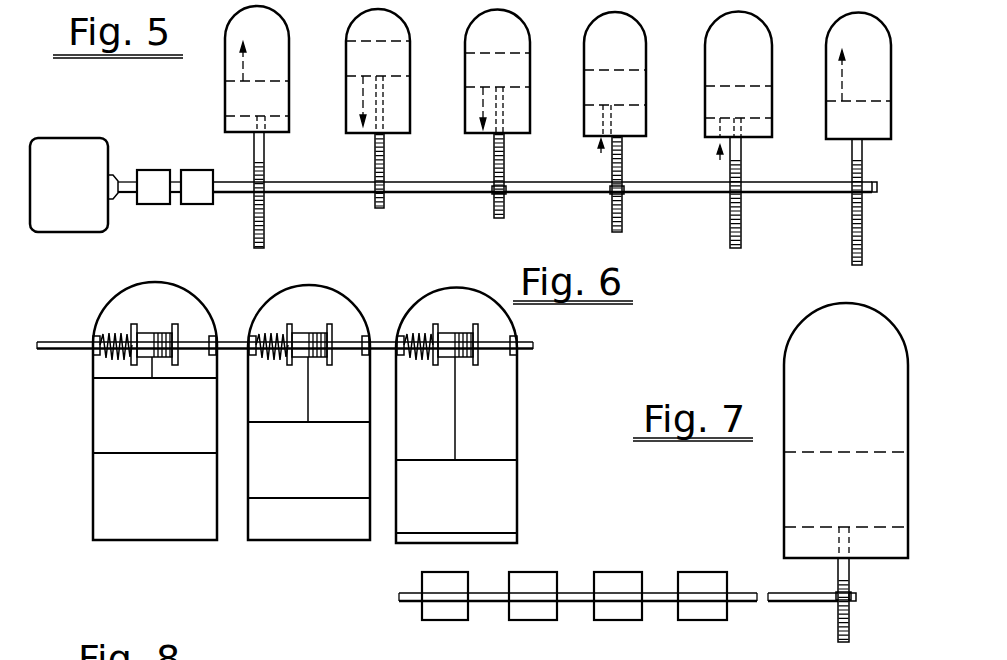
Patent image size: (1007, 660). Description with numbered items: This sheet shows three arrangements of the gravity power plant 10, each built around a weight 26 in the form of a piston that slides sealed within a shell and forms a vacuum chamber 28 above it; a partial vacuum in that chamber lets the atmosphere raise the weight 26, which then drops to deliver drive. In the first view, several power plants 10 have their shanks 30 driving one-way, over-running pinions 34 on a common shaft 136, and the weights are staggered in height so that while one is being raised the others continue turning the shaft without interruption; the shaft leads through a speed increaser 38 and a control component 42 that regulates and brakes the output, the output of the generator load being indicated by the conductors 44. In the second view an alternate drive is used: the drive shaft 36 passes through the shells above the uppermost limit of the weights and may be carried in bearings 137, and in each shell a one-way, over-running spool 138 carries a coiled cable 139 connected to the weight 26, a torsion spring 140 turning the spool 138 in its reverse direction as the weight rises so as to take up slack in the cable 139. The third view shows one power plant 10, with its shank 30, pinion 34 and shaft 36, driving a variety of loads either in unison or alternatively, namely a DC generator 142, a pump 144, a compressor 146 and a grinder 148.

In FIG. 5, the power plant 10 is at (558, 80).
In FIG. 6, the power plant 10 is at (305, 403).
In FIG. 7, the power plant 10 is at (811, 430).
In FIG. 5, the weight 26 is at (487, 51).
In FIG. 6, the weight 26 is at (147, 455).
In FIG. 7, the weight 26 is at (858, 452).
In FIG. 6, the vacuum chamber 28 is at (322, 302).
In FIG. 5, the shank 30 is at (852, 237).
In FIG. 7, the shank 30 is at (849, 630).
In FIG. 5, the pinion 34 is at (612, 197).
In FIG. 7, the pinion 34 is at (849, 597).
In FIG. 6, the shaft 36 is at (60, 350).
In FIG. 7, the shaft 36 is at (793, 604).
In FIG. 5, the speed increaser 38 is at (196, 201).
In FIG. 5, the control component 42 is at (152, 204).
In FIG. 5, the conductors 44 is at (67, 146).
In FIG. 5, the common shaft 136 is at (420, 195).
In FIG. 6, the bearings 137 is at (513, 367).
In FIG. 6, the spool 138 is at (181, 332).
In FIG. 6, the cable 139 is at (453, 412).
In FIG. 6, the torsion spring 140 is at (418, 338).
In FIG. 7, the DC generator 142 is at (696, 620).
In FIG. 7, the pump 144 is at (608, 620).
In FIG. 7, the compressor 146 is at (522, 620).
In FIG. 7, the grinder 148 is at (437, 620).